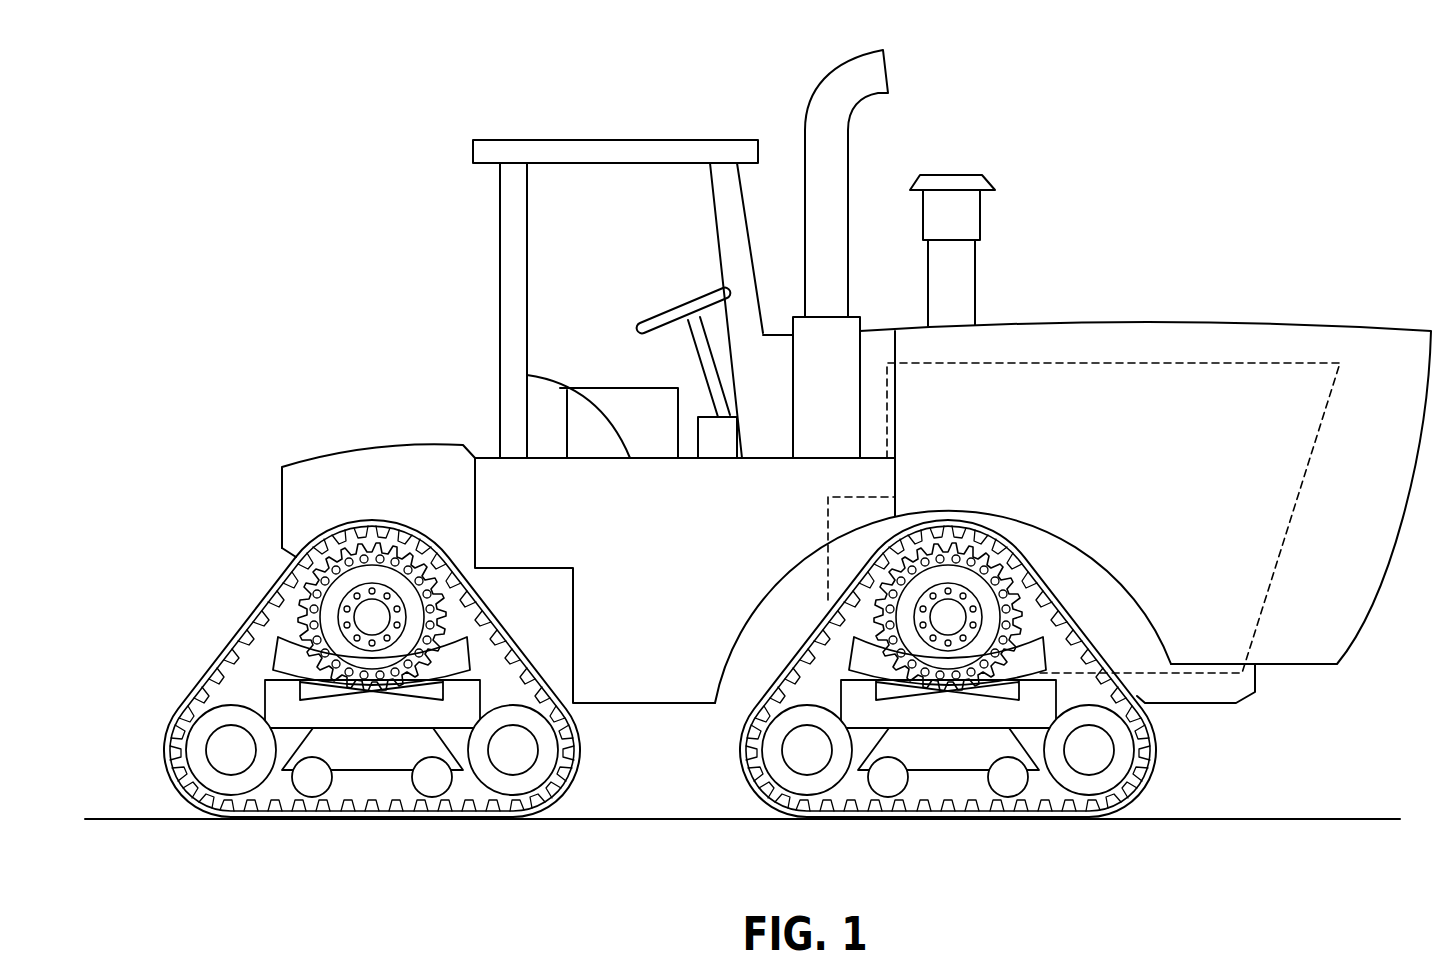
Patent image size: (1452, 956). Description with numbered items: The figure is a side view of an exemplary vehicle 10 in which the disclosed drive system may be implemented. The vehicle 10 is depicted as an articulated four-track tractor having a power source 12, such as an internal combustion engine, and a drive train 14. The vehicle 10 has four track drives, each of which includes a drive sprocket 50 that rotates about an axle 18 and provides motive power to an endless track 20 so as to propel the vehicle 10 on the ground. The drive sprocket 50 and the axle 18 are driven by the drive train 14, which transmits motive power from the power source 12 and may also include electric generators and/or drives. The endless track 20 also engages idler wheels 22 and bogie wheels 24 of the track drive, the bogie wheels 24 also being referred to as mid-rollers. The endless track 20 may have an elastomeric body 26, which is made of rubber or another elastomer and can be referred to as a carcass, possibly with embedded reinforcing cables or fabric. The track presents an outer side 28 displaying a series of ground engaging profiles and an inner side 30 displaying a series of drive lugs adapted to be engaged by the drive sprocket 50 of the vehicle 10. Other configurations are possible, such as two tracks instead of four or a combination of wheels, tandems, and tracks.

The vehicle 10 is at (413, 352).
The power source 12 is at (1120, 363).
The drive train 14 is at (828, 518).
The axle 18 is at (950, 612).
The endless track 20 is at (1080, 626).
The idler wheels 22 is at (773, 753).
The bogie wheels 24 is at (890, 780).
The elastomeric body 26 is at (1128, 802).
The outer side 28 is at (763, 805).
The inner side 30 is at (1073, 807).
The drive sprocket 50 is at (903, 625).